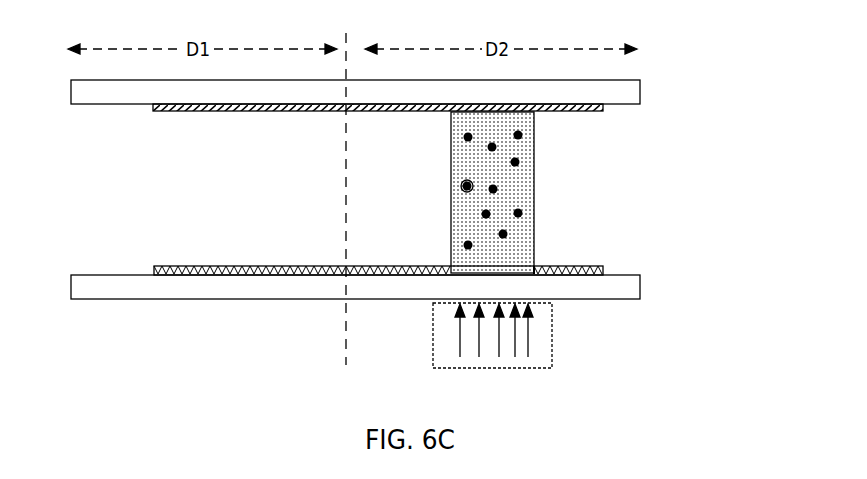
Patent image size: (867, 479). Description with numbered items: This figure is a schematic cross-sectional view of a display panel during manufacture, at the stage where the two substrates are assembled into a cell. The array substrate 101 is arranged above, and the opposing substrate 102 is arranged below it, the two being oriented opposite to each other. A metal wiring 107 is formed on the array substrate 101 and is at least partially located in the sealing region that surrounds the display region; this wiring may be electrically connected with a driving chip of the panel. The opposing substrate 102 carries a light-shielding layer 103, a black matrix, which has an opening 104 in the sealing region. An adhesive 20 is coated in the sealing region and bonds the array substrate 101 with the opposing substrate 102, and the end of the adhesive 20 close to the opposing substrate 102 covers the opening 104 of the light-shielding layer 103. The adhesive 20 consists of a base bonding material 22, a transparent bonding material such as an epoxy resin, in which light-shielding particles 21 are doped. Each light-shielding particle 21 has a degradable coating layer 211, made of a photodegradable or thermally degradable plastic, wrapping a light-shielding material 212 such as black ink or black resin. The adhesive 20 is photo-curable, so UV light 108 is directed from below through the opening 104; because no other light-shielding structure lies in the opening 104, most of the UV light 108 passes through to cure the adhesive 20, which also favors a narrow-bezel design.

The array substrate 101 is at (640, 93).
The metal wiring 107 is at (153, 107).
The adhesive 20 is at (535, 146).
The base bonding material 22 is at (515, 188).
The light-shielding particle 21 is at (395, 140).
The degradable coating layer 211 is at (466, 185).
The light-shielding material 212 is at (463, 190).
The light-shielding layer 103 is at (604, 270).
The opening 104 is at (534, 270).
The opposing substrate 102 is at (640, 288).
The UV light 108 is at (553, 333).